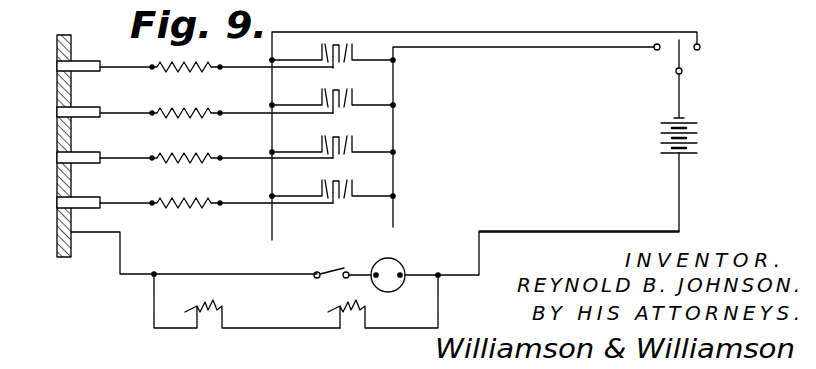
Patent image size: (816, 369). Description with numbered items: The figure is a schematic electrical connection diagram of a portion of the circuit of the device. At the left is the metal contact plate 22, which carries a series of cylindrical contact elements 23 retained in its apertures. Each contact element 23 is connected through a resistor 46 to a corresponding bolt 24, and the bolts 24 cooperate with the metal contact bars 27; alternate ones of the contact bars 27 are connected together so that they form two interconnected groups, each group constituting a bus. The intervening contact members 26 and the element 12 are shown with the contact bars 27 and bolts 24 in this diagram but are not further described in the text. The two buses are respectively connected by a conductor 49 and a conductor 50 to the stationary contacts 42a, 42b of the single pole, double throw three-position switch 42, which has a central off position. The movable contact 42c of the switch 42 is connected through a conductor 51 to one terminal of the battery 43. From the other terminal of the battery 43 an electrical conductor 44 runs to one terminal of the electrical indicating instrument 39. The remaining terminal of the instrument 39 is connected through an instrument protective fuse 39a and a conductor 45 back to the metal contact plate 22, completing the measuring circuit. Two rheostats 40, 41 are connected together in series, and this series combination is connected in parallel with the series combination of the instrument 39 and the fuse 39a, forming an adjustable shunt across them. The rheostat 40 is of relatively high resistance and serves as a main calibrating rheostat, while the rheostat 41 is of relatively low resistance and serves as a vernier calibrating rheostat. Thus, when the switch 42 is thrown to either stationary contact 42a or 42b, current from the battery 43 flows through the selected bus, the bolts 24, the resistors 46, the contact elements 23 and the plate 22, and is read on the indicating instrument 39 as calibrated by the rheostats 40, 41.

The record card 12 is at (382, 12).
The metal plate 22 is at (57, 178).
The cylindrical contact element 23 is at (93, 67).
The bolt 24 is at (343, 42).
The contact fingers 26 is at (323, 42).
The metal contact bar 27 is at (322, 52).
The electrical indicating instrument 39 is at (404, 268).
The instrument protective fuse 39a is at (347, 258).
The rheostat 40 is at (217, 316).
The rheostat 41 is at (357, 312).
The single pole, double throw three-position switch 42 is at (687, 59).
The stationary contact 42a is at (701, 47).
The stationary contact 42b is at (657, 51).
The movable contact 42c is at (678, 73).
The battery 43 is at (694, 139).
The electrical conductor 44 is at (679, 201).
The conductor 45 is at (120, 255).
The resistor 46 is at (186, 74).
The conductor 49 is at (578, 28).
The conductor 50 is at (561, 50).
The conductor 51 is at (683, 101).